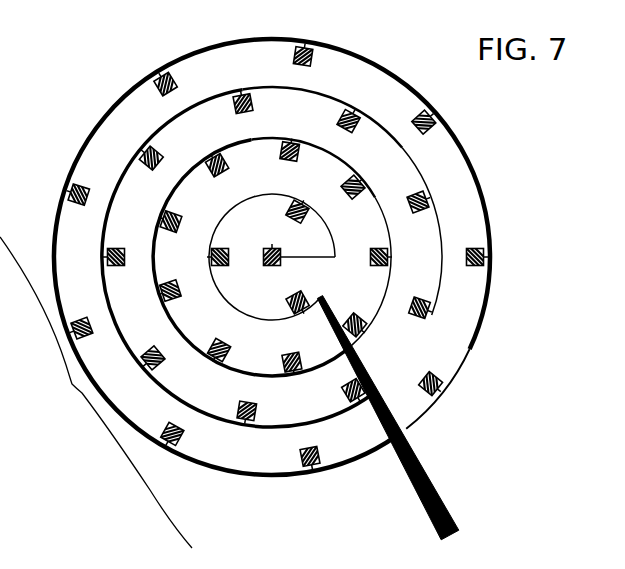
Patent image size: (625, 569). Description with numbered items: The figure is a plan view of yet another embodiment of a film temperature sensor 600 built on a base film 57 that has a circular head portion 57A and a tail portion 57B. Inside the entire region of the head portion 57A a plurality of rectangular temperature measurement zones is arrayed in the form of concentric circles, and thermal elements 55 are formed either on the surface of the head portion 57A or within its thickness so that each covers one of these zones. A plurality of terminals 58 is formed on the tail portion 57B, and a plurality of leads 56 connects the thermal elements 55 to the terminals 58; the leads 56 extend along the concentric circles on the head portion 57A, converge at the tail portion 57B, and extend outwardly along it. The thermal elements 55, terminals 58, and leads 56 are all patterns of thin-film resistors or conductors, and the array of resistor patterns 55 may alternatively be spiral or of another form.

The film temperature sensor 600 is at (498, 124).
The thermal element 55 is at (142, 163).
The lead 56 is at (440, 285).
The base film 57 is at (472, 212).
The head portion 57A is at (96, 392).
The tail portion 57B is at (427, 543).
The terminal 58 is at (458, 527).